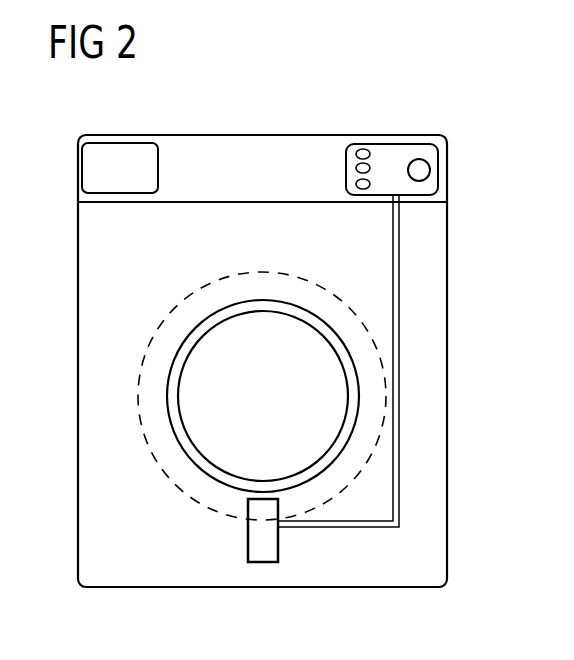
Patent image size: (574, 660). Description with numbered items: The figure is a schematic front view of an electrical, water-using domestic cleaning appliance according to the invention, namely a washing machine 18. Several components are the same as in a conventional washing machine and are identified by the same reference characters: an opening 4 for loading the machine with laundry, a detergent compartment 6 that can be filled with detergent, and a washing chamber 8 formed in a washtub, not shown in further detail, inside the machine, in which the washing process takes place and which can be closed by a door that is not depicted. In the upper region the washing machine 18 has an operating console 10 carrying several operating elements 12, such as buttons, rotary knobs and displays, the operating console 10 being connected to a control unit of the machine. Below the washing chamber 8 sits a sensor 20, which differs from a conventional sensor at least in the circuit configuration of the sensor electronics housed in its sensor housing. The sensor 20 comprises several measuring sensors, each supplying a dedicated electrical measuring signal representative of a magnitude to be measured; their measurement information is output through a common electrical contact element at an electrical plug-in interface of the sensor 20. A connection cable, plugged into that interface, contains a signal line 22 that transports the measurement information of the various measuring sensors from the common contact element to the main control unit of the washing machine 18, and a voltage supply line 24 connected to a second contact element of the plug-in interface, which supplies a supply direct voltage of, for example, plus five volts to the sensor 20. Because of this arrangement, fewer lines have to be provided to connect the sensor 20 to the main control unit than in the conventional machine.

The opening 4 is at (203, 393).
The detergent compartment 6 is at (118, 143).
The washing chamber 8 is at (205, 487).
The operating console 10 is at (447, 167).
The operating elements 12 is at (413, 160).
The washing machine 18 is at (470, 98).
The sensor 20 is at (262, 562).
The signal line 22 is at (393, 283).
The voltage supply line 24 is at (399, 337).